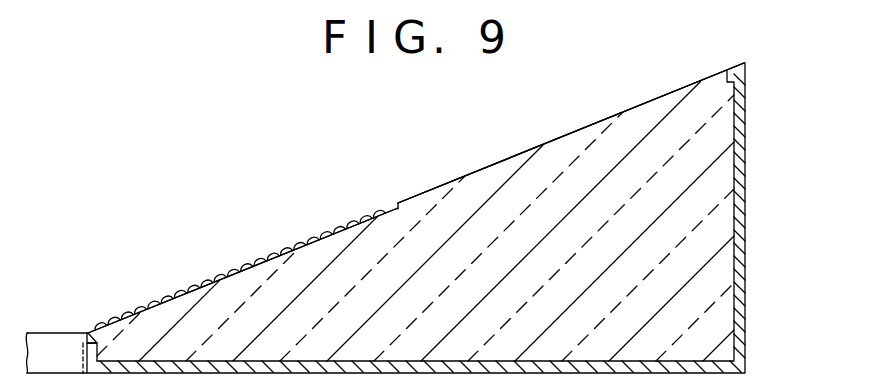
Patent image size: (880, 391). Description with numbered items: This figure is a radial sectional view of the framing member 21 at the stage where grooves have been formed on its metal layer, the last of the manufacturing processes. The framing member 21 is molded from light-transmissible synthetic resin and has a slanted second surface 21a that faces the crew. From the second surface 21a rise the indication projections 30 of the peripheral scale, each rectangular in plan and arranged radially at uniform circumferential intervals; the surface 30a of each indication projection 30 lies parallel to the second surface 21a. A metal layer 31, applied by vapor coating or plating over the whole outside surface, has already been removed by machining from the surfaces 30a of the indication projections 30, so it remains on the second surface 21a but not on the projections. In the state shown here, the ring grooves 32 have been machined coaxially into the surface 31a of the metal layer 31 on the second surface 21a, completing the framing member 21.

The framing member 21 is at (748, 287).
The second surface 21a is at (310, 238).
The indication projection 30 is at (383, 209).
The surface of the indication projection 30a is at (524, 150).
The metal layer 31 is at (240, 265).
The surface of the metal layer 31a is at (102, 328).
The ring groove 32 is at (140, 249).